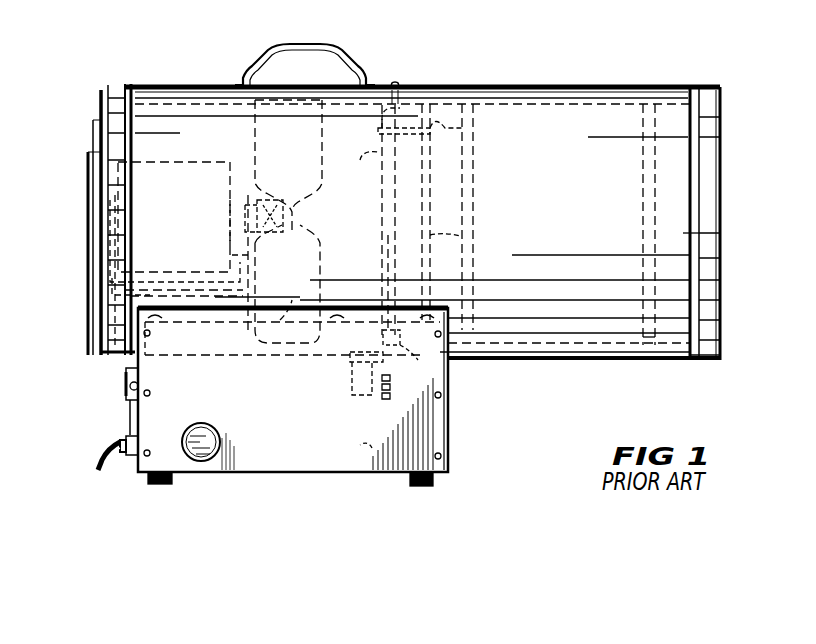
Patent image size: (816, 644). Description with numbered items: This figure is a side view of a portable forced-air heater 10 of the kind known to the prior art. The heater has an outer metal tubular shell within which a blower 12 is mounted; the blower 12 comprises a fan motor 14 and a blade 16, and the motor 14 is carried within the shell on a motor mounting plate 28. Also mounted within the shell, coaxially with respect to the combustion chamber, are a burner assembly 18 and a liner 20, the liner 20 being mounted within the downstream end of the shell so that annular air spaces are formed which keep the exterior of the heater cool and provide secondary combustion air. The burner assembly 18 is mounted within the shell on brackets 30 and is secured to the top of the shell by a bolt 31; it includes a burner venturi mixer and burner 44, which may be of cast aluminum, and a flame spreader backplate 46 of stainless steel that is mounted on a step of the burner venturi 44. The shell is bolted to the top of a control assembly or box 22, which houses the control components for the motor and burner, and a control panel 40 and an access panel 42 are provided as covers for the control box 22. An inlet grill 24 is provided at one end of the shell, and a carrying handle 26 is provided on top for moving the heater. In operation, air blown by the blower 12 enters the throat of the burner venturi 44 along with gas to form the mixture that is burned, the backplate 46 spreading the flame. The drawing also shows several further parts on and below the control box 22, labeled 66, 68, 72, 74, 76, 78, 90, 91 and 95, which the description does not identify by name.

The heater 10 is at (453, 44).
The blower 12 is at (240, 154).
The fan motor 14 is at (153, 240).
The blade 16 is at (258, 70).
The burner assembly 18 is at (362, 200).
The liner 20 is at (576, 103).
The control box 22 is at (276, 474).
The inlet grill 24 is at (100, 105).
The carrying handle 26 is at (322, 48).
The motor mounting plate 28 is at (153, 292).
The brackets 30 is at (447, 378).
The bolt 31 is at (399, 90).
The control panel 40 is at (135, 420).
The access panel 42 is at (446, 440).
The burner venturi mixer and burner 44 is at (345, 241).
The flame spreader backplate 46 is at (468, 242).
The hose fitting 66 is at (122, 446).
The control knob 68 is at (203, 462).
The fitting 72 is at (128, 388).
The screw 74 is at (140, 387).
The switch 76 is at (358, 418).
The connector 78 is at (378, 152).
The foot 90 is at (158, 486).
The foot 91 is at (412, 486).
The fuel hose 95 is at (100, 470).